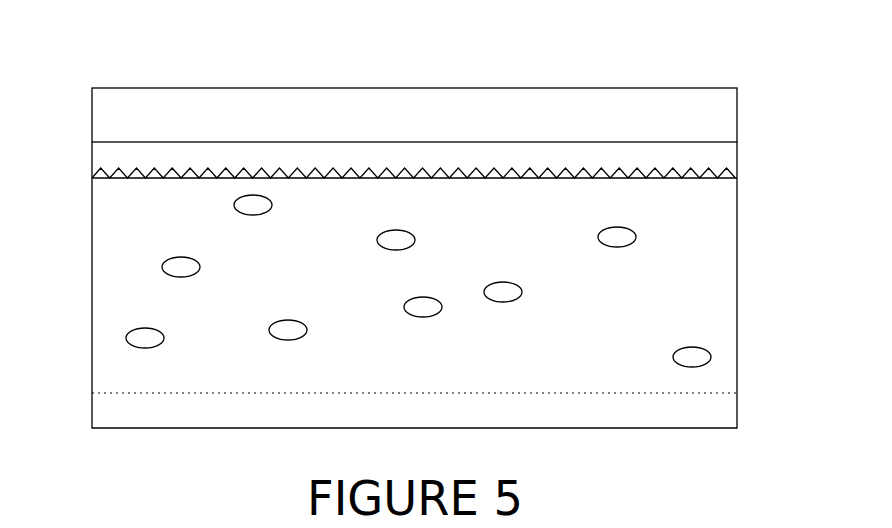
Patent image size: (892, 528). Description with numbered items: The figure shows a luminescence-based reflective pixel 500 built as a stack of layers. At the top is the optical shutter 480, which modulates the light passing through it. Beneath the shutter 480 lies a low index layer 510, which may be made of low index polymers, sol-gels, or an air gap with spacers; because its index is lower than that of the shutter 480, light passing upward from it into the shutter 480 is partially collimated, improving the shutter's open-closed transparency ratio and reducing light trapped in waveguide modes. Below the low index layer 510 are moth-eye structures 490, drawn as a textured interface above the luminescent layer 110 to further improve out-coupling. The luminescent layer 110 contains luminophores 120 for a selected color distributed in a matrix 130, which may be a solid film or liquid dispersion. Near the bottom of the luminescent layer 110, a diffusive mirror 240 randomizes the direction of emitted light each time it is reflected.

The luminescence-based reflective pixel 500 is at (253, 52).
The optical shutter 480 is at (397, 126).
The low index layer 510 is at (720, 160).
The moth-eye structures 490 is at (92, 173).
The luminescent layer 110 is at (748, 268).
The matrix 130 is at (207, 331).
The luminophores 120 is at (396, 242).
The diffusive mirror 240 is at (720, 410).